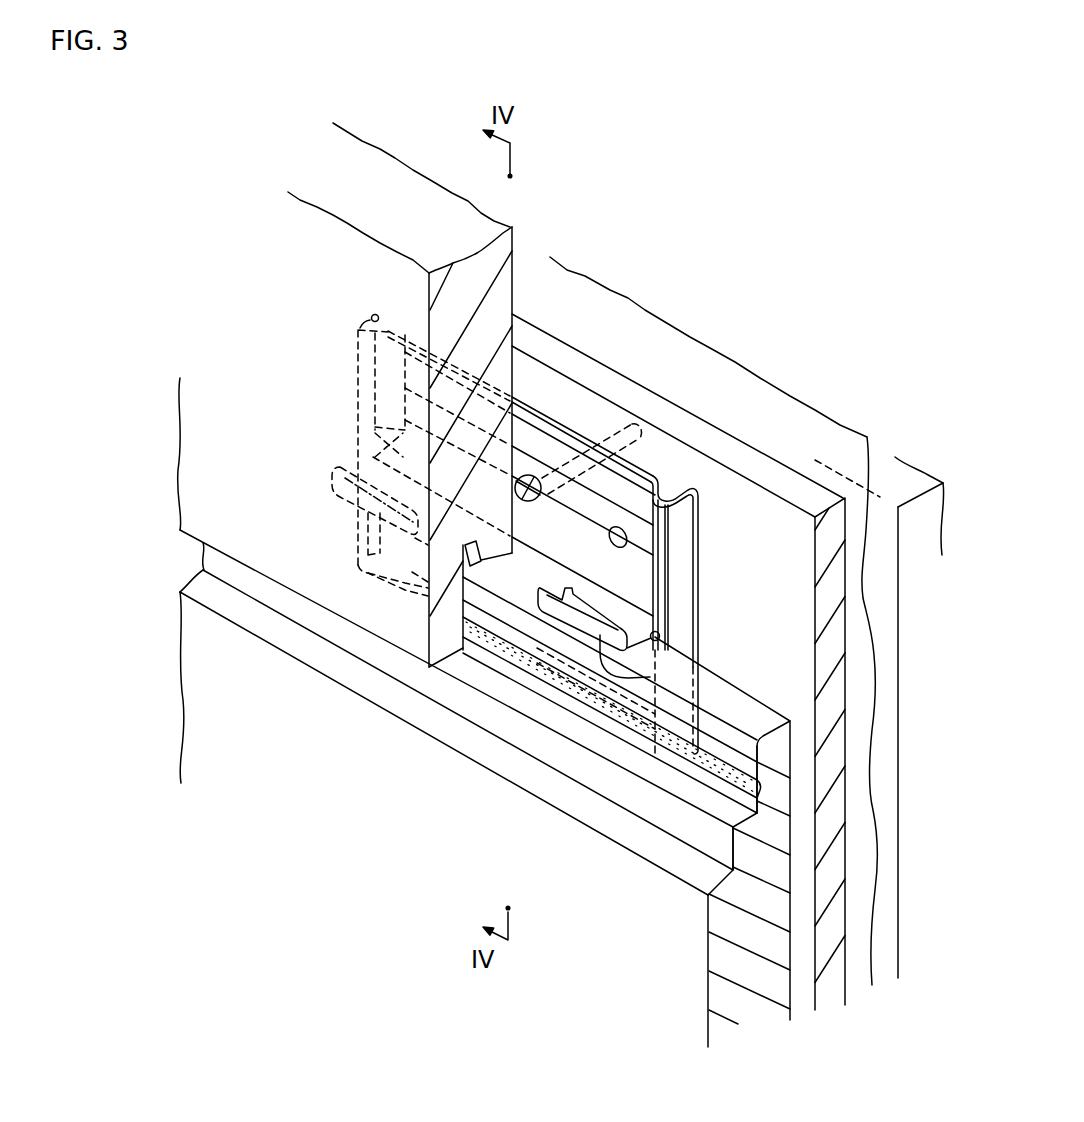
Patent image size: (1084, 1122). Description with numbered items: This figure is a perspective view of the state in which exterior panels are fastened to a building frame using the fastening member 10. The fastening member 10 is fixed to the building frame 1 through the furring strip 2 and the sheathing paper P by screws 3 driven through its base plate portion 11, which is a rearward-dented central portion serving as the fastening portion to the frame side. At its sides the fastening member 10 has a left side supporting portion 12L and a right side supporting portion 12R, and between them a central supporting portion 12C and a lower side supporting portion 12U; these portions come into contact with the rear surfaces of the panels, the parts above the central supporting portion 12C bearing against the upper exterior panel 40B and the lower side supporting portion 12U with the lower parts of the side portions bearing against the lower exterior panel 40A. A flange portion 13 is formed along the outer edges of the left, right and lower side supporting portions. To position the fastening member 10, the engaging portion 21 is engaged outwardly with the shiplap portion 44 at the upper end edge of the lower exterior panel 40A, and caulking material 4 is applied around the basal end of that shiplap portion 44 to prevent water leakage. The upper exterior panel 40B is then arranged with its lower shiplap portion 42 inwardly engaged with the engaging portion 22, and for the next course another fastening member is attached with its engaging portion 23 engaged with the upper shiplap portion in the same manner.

The building frame 1 is at (920, 513).
The furring strip 2 is at (670, 412).
The screw 3 is at (614, 428).
The caulking material 4 is at (707, 763).
The fastening member 10 is at (508, 529).
The base plate portion 11 is at (545, 420).
The left side supporting portion 12L is at (357, 370).
The central supporting portion 12C is at (363, 430).
The lower side supporting portion 12U is at (390, 583).
The right side supporting portion 12R is at (664, 589).
The flange portion 13 is at (698, 516).
The engaging portion 21 is at (540, 617).
The engaging portion 22 is at (350, 510).
The engaging portion 23 is at (483, 603).
The lower exterior panel 40A is at (441, 788).
The upper exterior panel 40B is at (213, 399).
The lower shiplap portion 42 is at (512, 543).
The shiplap portion 44 is at (733, 743).
The sheathing paper P is at (812, 423).